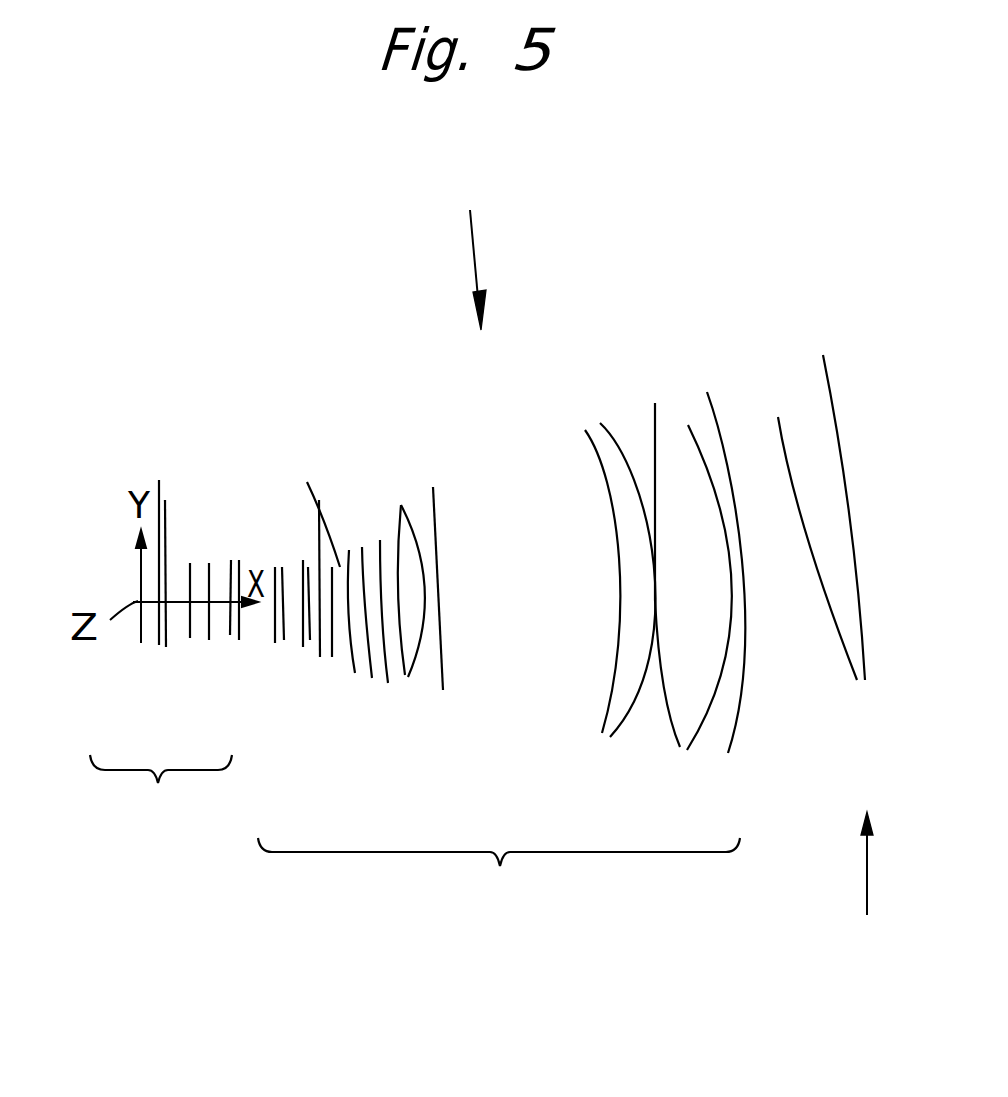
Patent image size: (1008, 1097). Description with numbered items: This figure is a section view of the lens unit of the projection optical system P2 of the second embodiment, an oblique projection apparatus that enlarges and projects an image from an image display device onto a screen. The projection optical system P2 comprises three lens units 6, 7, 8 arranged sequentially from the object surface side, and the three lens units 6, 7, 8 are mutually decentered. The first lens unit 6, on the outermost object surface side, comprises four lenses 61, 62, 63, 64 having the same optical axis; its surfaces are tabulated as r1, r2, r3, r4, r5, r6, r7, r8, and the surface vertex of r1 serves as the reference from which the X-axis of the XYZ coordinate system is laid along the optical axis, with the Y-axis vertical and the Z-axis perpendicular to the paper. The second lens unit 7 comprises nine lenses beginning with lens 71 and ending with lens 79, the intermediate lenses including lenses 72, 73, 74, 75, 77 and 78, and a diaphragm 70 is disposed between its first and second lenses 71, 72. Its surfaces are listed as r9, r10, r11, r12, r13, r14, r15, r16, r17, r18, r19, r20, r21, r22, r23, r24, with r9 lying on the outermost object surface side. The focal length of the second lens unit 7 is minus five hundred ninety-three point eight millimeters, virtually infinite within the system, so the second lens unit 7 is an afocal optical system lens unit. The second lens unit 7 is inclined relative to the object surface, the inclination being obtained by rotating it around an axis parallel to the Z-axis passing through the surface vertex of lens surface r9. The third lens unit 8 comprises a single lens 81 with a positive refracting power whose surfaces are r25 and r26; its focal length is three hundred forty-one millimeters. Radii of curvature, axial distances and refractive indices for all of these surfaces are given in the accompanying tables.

The first lens unit 6 is at (205, 488).
The lens 61 is at (122, 583).
The lens 62 is at (171, 519).
The lens 63 is at (188, 453).
The lens 64 is at (284, 460).
The second lens unit 7 is at (515, 584).
The diaphragm 70 is at (298, 552).
The lens 71 is at (323, 519).
The lens 72 is at (353, 598).
The lens 73 is at (415, 622).
The lens 74 is at (459, 618).
The lens 75 is at (482, 636).
The lens 77 is at (585, 583).
The lens 78 is at (682, 541).
The lens 79 is at (741, 572).
The third lens unit 8 is at (867, 888).
The lens 81 is at (827, 494).
The projection optical system P2 is at (462, 248).
The lens surface r1 is at (140, 570).
The lens surface r2 is at (159, 480).
The lens surface r3 is at (164, 567).
The lens surface r4 is at (191, 563).
The lens surface r5 is at (208, 563).
The lens surface r6 is at (231, 560).
The lens surface r7 is at (239, 560).
The lens surface r8 is at (275, 567).
The lens surface r9 is at (282, 567).
The lens surface r10 is at (302, 560).
The lens surface r11 is at (308, 567).
The lens surface r12 is at (332, 567).
The lens surface r13 is at (349, 550).
The lens surface r14 is at (362, 547).
The lens surface r15 is at (382, 540).
The lens surface r16 is at (400, 533).
The lens surface r17 is at (418, 568).
The lens surface r18 is at (442, 593).
The lens surface r19 is at (590, 452).
The lens surface r20 is at (613, 438).
The lens surface r21 is at (657, 420).
The lens surface r22 is at (697, 447).
The lens surface r23 is at (688, 423).
The lens surface r24 is at (717, 418).
The lens surface r25 is at (778, 417).
The lens surface r26 is at (824, 362).